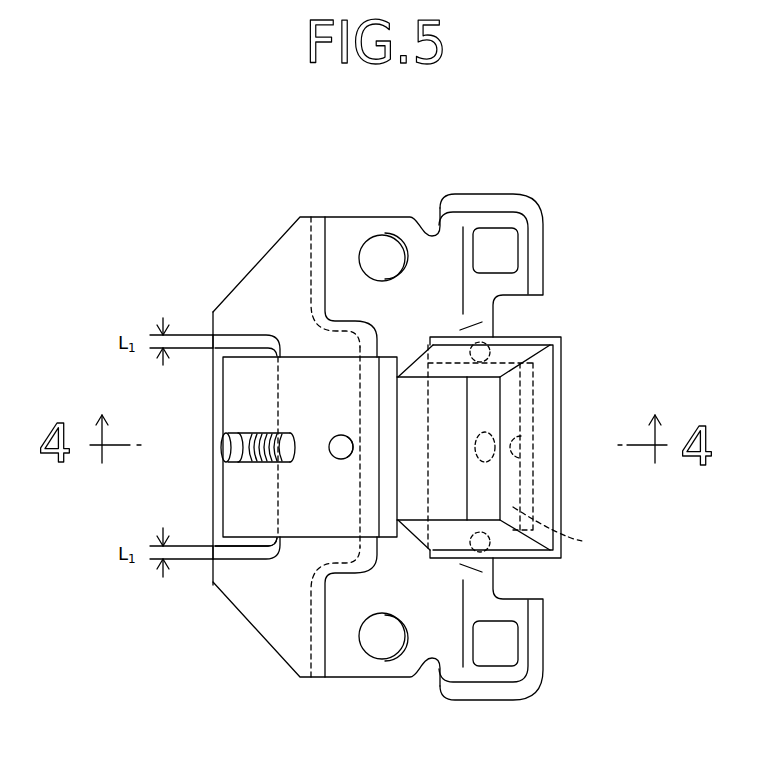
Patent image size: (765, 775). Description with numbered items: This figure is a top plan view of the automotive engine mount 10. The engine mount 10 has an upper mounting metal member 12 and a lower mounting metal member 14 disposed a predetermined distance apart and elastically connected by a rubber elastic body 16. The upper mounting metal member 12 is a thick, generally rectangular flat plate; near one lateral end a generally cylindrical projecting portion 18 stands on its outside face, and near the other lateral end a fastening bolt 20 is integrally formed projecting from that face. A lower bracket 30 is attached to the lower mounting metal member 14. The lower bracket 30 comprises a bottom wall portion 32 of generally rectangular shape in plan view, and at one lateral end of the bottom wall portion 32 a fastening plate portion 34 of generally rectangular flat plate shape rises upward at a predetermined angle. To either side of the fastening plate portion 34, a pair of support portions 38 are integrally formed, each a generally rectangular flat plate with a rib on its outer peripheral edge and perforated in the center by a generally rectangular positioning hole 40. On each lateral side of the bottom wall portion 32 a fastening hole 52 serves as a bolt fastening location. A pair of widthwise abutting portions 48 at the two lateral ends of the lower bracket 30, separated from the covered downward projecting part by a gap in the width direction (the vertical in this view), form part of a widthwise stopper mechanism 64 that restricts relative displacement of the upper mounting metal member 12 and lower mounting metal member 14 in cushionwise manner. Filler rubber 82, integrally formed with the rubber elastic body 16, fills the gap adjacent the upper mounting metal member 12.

The engine mount 10 is at (206, 226).
The upper mounting metal member 12 is at (228, 492).
The lower mounting metal member 14 is at (558, 498).
The rubber elastic body 16 is at (518, 410).
The projecting portion 18 is at (336, 438).
The fastening bolt 20 is at (268, 435).
The lower bracket 30 is at (543, 202).
The bottom wall portion 32 is at (420, 620).
The fastening plate portion 34 is at (561, 531).
The support portion 38 is at (513, 281).
The positioning hole 40 is at (499, 229).
The widthwise abutting portion 48 is at (240, 327).
The fastening hole 52 is at (384, 236).
The widthwise stopper mechanism 64 is at (205, 530).
The filler rubber 82 is at (438, 410).